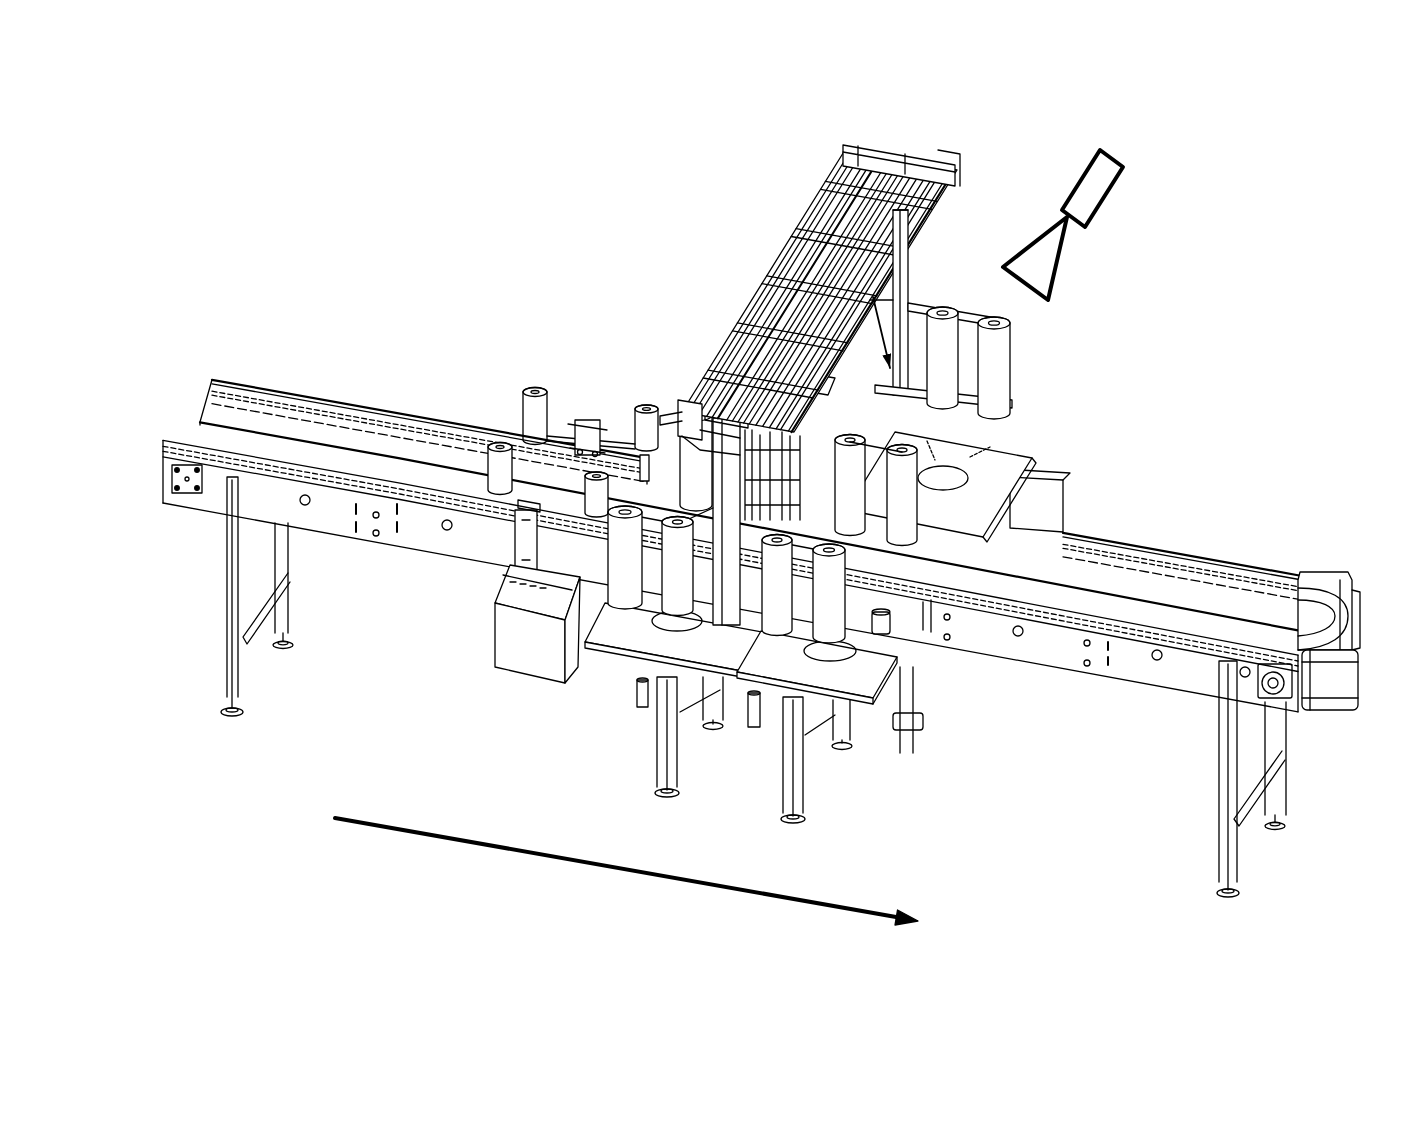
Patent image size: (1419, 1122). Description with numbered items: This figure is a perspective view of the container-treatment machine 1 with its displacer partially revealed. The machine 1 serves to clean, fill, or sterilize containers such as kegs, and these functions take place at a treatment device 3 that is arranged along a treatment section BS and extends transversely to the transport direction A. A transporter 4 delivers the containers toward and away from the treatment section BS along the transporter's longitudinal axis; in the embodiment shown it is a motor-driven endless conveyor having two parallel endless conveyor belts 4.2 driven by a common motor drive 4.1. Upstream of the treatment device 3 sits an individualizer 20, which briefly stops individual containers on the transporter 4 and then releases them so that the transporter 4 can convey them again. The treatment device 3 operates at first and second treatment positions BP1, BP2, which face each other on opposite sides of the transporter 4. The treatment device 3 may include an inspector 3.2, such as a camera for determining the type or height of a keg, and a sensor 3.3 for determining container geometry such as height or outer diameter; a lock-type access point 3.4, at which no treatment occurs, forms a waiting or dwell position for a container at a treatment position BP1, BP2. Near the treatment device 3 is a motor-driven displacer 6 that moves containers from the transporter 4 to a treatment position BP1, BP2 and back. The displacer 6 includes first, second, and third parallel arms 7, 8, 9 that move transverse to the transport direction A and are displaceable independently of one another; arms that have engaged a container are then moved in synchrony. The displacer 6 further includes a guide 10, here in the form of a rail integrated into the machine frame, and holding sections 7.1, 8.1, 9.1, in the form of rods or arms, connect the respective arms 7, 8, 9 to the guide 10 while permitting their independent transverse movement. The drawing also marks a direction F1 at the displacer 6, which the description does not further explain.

The container-treatment machine 1 is at (222, 150).
The treatment device 3 is at (1125, 392).
The inspector 3.2 is at (1132, 153).
The sensor 3.3 is at (985, 453).
The lock-type access point 3.4 is at (782, 658).
The transporter 4 is at (262, 355).
The motor drive 4.1 is at (1350, 730).
The conveyor belt 4.2 is at (222, 415).
The displacer 6 is at (963, 200).
The first arm 7 is at (625, 585).
The holding section 7.1 is at (733, 507).
The second arm 8 is at (905, 512).
The holding section 8.1 is at (763, 397).
The third arm 9 is at (1003, 367).
The holding section 9.1 is at (908, 265).
The guide 10 is at (735, 277).
The individualizer 20 is at (513, 687).
The first treatment position BP1 is at (872, 658).
The second treatment position BP2 is at (1000, 487).
The force direction F1 is at (871, 321).
The treatment section BS is at (626, 871).
The transport direction A is at (626, 871).